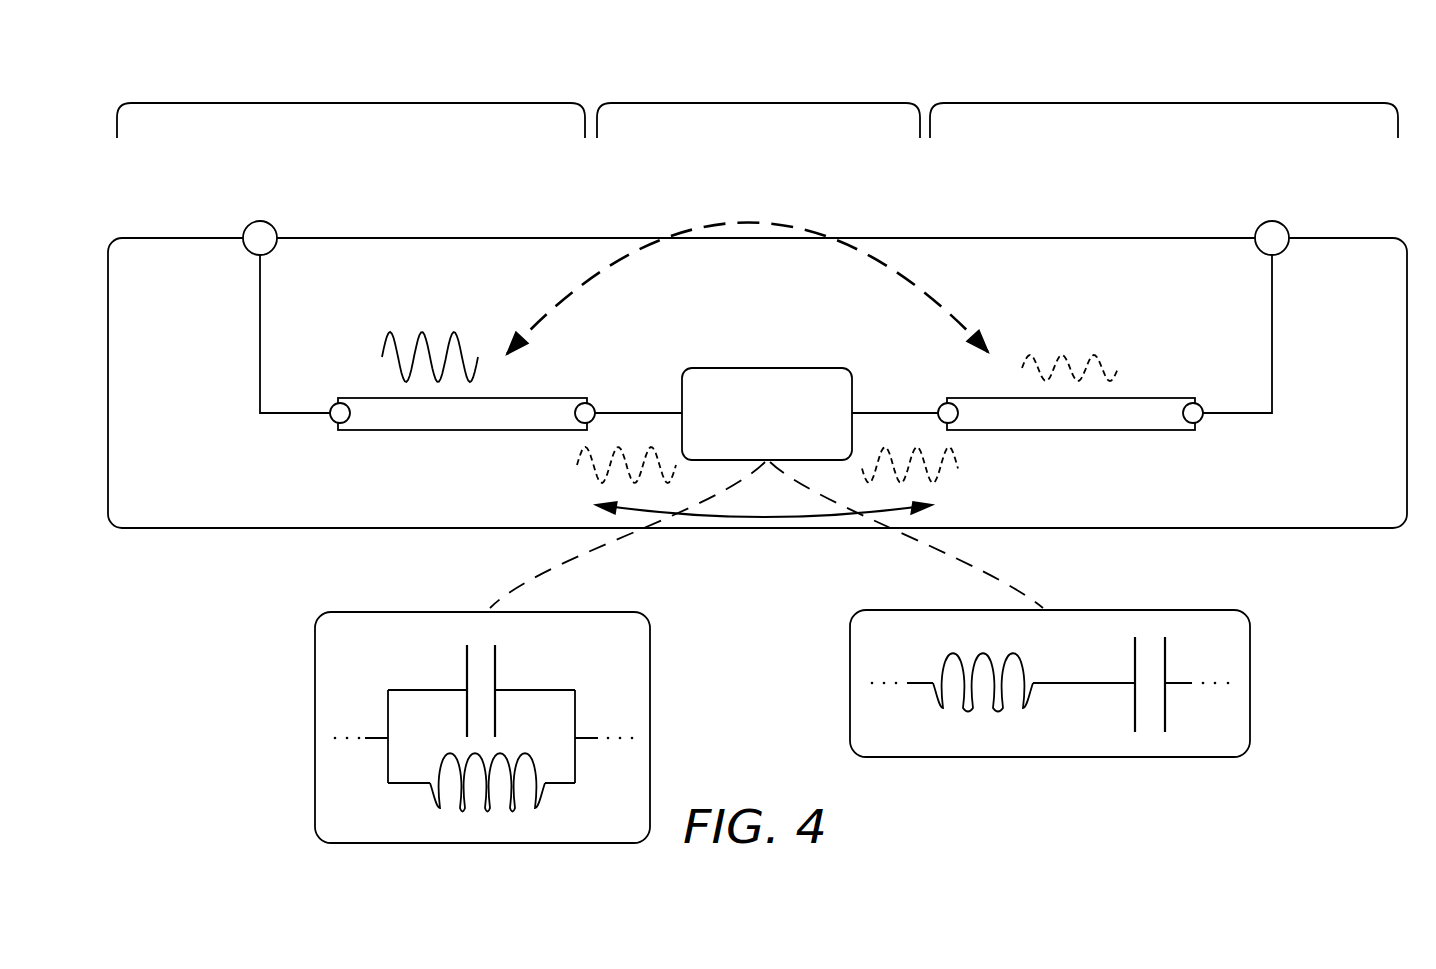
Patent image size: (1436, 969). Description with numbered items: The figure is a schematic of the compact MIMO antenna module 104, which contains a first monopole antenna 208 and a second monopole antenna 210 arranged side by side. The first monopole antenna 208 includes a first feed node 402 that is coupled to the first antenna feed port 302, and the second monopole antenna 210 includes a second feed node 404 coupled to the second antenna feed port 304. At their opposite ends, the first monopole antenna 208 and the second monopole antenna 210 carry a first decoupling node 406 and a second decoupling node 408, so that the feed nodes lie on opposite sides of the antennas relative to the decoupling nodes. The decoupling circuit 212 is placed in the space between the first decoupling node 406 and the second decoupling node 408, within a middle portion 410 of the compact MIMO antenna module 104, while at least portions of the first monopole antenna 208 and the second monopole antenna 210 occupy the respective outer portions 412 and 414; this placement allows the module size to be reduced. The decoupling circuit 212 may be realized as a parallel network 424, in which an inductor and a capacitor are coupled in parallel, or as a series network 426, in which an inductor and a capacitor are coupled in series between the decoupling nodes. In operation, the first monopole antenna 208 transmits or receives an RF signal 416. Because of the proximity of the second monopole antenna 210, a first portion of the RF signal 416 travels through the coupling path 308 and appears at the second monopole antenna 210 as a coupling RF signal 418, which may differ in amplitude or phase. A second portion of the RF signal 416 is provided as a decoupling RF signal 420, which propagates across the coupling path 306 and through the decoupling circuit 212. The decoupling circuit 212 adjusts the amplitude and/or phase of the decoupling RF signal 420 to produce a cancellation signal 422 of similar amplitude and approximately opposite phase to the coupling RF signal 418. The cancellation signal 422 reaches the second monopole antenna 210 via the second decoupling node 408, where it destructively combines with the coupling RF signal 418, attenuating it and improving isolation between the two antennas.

The compact MIMO antenna module 104 is at (313, 528).
The first monopole antenna 208 is at (557, 432).
The second monopole antenna 210 is at (967, 432).
The decoupling circuit 212 is at (785, 452).
The first antenna feed port 302 is at (272, 224).
The second antenna feed port 304 is at (1261, 224).
The coupling path 306 is at (752, 516).
The coupling path 308 is at (758, 222).
The first feed node 402 is at (333, 423).
The second feed node 404 is at (1200, 423).
The first decoupling node 406 is at (593, 404).
The second decoupling node 408 is at (938, 404).
The middle portion 410 is at (748, 103).
The outer portion 412 is at (340, 103).
The outer portion 414 is at (1153, 103).
The RF signal 416 is at (390, 332).
The coupling RF signal 418 is at (1032, 357).
The decoupling RF signal 420 is at (595, 470).
The cancellation signal 422 is at (938, 468).
The parallel network 424 is at (315, 720).
The series network 426 is at (1250, 680).